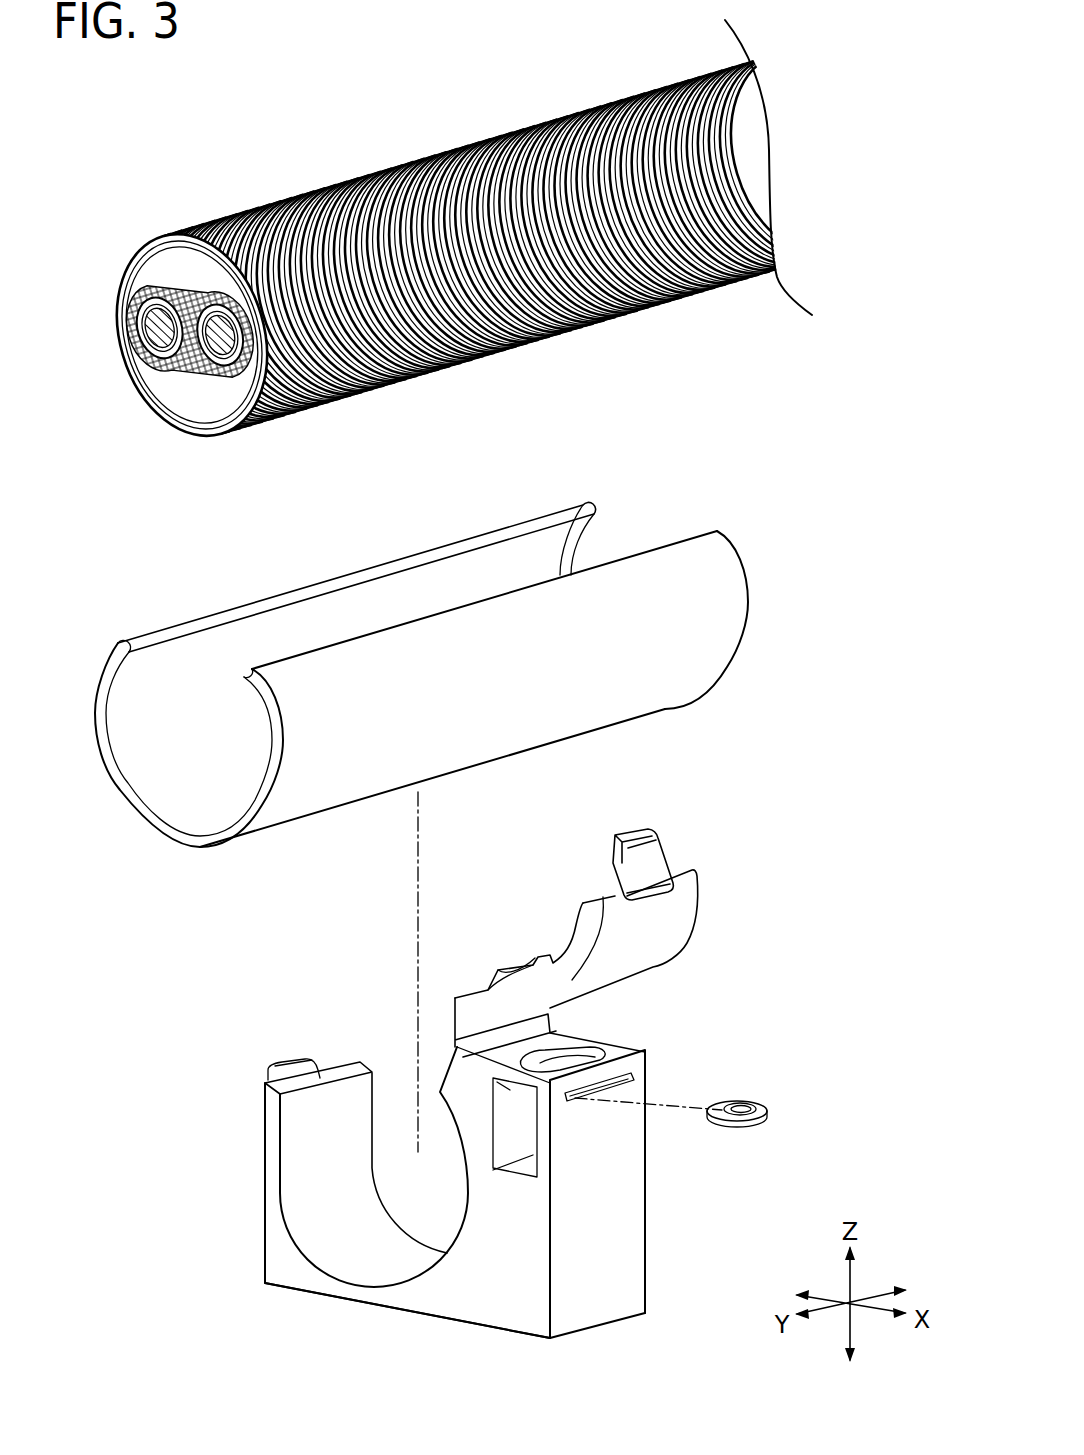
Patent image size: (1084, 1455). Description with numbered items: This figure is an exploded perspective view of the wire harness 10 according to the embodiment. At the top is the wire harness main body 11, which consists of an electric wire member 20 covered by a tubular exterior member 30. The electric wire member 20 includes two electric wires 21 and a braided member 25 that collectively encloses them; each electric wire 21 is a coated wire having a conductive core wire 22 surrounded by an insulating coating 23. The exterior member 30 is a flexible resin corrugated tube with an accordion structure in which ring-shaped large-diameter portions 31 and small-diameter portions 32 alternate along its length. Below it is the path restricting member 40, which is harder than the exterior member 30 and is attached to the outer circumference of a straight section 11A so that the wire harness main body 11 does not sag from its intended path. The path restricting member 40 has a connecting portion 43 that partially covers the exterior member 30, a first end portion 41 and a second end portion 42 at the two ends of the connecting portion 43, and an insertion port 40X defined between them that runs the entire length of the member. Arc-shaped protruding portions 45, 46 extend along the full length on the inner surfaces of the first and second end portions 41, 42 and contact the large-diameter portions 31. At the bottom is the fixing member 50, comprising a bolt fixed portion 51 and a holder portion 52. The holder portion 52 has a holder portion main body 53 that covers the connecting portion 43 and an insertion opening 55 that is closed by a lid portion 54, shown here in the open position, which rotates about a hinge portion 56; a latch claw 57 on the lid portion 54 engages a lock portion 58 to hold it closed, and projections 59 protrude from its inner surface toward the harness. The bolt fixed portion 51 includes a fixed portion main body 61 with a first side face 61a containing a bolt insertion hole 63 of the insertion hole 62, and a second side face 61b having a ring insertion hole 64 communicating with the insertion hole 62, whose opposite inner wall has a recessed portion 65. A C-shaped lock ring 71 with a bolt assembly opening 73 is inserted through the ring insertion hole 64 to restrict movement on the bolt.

The wire harness 10 is at (122, 148).
The wire harness main body 11 is at (657, 306).
The straight section 11A is at (528, 302).
The electric wire member 20 is at (170, 167).
The electric wire 21 is at (193, 273).
The core wire 22 is at (124, 358).
The insulating coating 23 is at (168, 383).
The braided member 25 is at (219, 262).
The exterior member 30 is at (557, 107).
The large-diameter portion 31 is at (486, 163).
The small-diameter portion 32 is at (522, 184).
The path restricting member 40 is at (729, 694).
The insertion port 40X is at (441, 594).
The first end portion 41 is at (511, 535).
The second end portion 42 is at (657, 548).
The connecting portion 43 is at (165, 833).
The protruding portion 45 is at (148, 650).
The protruding portion 46 is at (251, 680).
The fixing member 50 is at (637, 1325).
The bolt fixed portion 51 is at (509, 1166).
The holder portion 52 is at (335, 1292).
The holder portion main body 53 is at (296, 1270).
The lid portion 54 is at (686, 910).
The insertion opening 55 is at (340, 1100).
The hinge portion 56 is at (455, 1043).
The latch claw 57 is at (641, 829).
The lock portion 58 is at (296, 1064).
The projection 59 is at (498, 970).
The fixed portion main body 61 is at (633, 1135).
The first side face 61a is at (555, 1042).
The second side face 61b is at (633, 1164).
The insertion hole 62 is at (508, 1164).
The bolt insertion hole 63 is at (590, 1060).
The ring insertion hole 64 is at (573, 1094).
The recessed portion 65 is at (492, 1097).
The lock ring 71 is at (767, 1116).
The bolt assembly opening 73 is at (724, 1105).